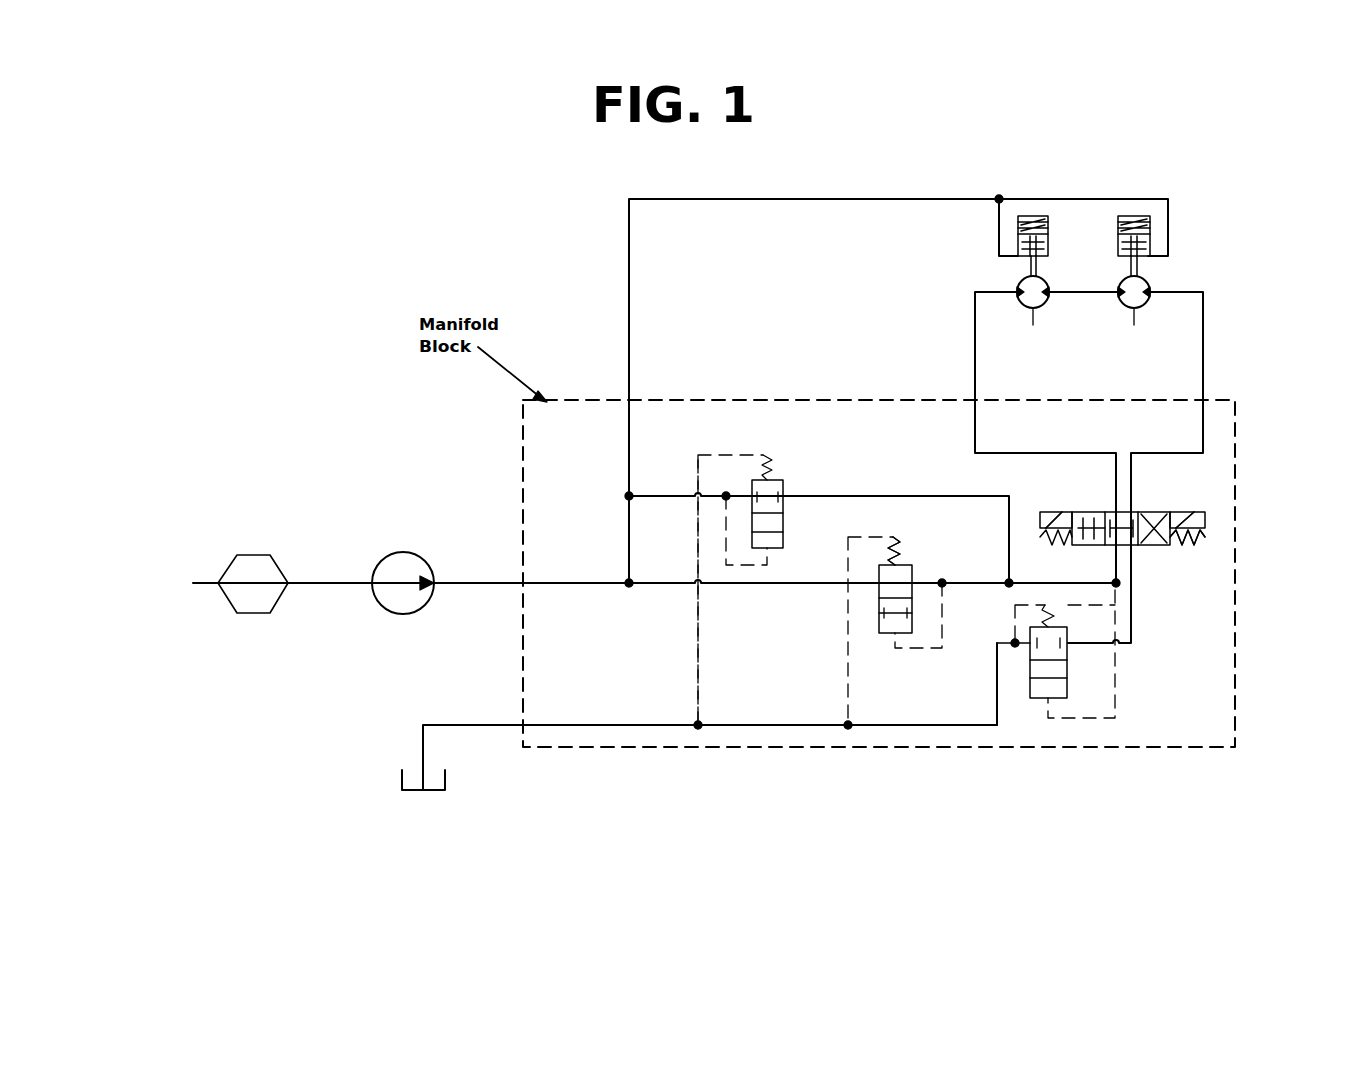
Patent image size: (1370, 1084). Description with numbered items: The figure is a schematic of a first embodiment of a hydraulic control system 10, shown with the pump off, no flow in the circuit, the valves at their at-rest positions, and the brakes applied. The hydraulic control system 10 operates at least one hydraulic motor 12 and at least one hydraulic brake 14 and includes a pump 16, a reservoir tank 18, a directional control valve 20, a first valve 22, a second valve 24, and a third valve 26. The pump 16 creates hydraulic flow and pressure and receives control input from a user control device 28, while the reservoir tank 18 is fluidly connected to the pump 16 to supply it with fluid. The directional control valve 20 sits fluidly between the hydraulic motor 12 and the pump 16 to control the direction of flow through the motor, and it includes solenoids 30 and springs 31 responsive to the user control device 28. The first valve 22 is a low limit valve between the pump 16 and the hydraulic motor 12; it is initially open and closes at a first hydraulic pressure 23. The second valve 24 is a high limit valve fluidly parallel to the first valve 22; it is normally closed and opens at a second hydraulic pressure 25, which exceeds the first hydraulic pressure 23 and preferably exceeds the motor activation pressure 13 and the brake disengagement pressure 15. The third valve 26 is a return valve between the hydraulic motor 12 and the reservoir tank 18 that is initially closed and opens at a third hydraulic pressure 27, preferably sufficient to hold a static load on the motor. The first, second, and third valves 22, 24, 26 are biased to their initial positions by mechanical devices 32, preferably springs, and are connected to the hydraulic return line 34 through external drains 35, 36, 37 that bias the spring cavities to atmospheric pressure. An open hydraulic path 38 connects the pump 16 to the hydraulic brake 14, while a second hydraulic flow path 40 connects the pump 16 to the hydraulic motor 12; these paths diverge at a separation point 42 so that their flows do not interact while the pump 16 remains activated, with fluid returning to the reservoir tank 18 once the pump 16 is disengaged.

The hydraulic control system 10 is at (320, 422).
The hydraulic motor 12 is at (1017, 288).
The motor activation pressure 13 is at (1093, 357).
The hydraulic brake 14 is at (1047, 217).
The brake disengagement pressure 15 is at (1100, 223).
The pump 16 is at (385, 556).
The reservoir tank 18 is at (384, 783).
The directional control valve 20 is at (1178, 500).
The first valve 22 is at (881, 650).
The first hydraulic pressure 23 is at (962, 548).
The second valve 24 is at (707, 418).
The second hydraulic pressure 25 is at (797, 450).
The third valve 26 is at (1035, 712).
The third hydraulic pressure 27 is at (1090, 650).
The user control device 28 is at (233, 622).
The solenoids 30 is at (1207, 520).
The springs 31 is at (1195, 547).
The mechanical devices 32 is at (783, 475).
The hydraulic return line 34 is at (633, 725).
The external drain 35 is at (847, 678).
The external drain 36 is at (697, 678).
The external drain 37 is at (1012, 617).
The open hydraulic path 38 is at (768, 199).
The second hydraulic flow path 40 is at (677, 583).
The separation point 42 is at (629, 496).